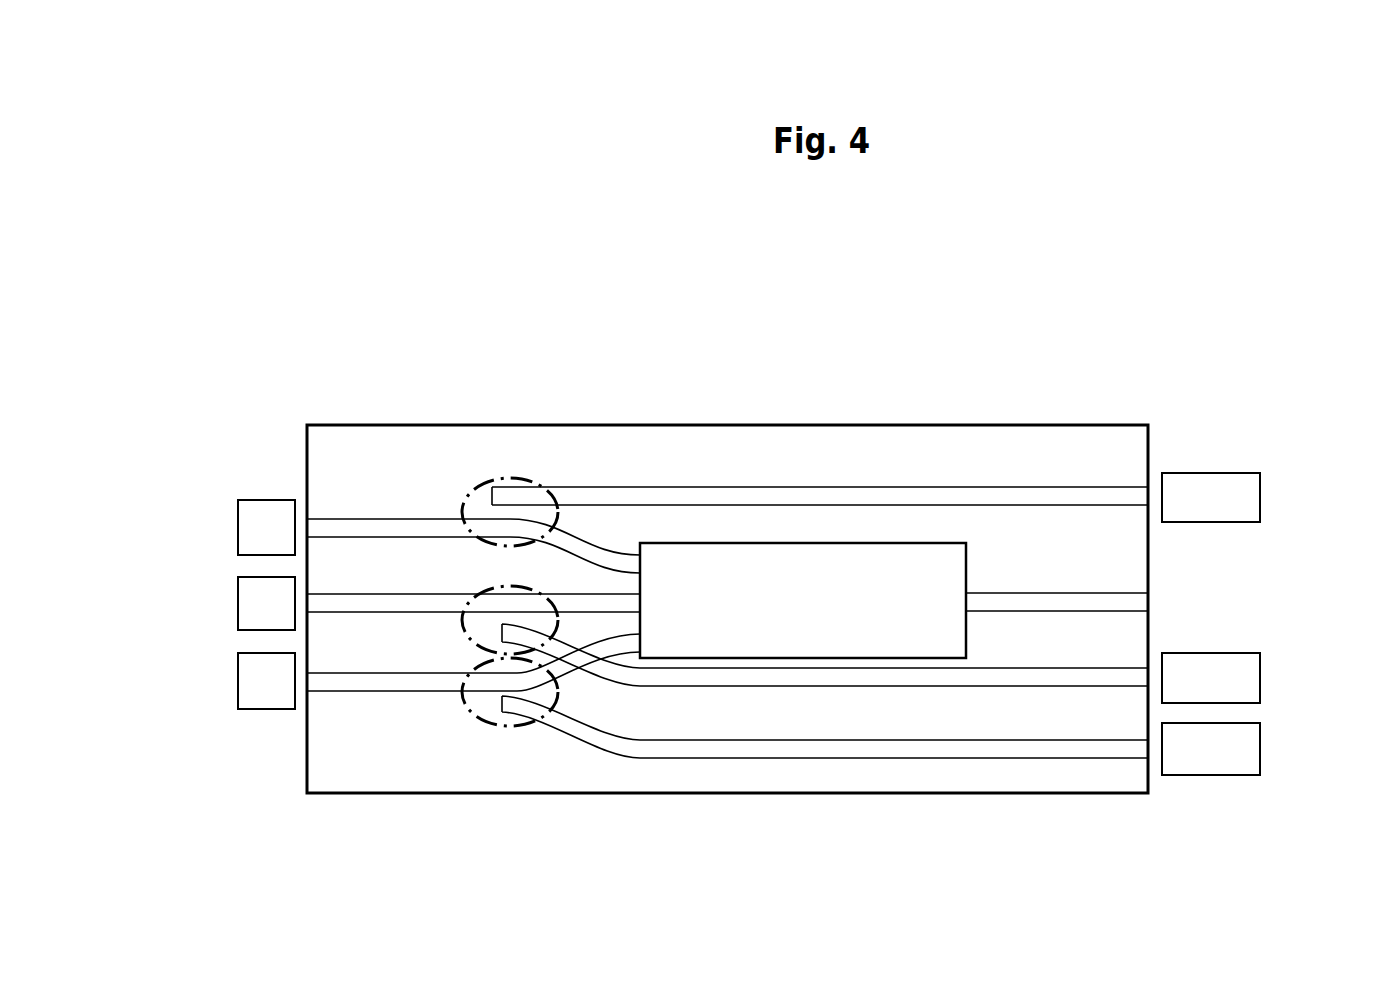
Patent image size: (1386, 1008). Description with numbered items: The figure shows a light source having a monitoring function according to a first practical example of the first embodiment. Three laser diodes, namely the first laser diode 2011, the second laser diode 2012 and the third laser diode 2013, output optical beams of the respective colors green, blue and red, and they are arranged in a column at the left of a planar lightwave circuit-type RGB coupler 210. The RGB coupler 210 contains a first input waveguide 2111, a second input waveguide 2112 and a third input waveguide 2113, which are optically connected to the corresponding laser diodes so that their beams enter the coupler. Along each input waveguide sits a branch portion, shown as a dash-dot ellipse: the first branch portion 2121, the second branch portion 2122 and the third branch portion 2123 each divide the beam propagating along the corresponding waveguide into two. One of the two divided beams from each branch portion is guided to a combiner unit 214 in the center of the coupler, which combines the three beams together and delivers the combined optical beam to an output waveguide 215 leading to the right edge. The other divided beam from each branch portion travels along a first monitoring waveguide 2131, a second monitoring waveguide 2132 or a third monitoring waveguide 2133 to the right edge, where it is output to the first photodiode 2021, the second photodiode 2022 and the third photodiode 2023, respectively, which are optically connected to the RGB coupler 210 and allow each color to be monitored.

The PLC-type RGB coupler 210 is at (993, 425).
The first laser diode 2011 is at (238, 532).
The second laser diode 2012 is at (238, 608).
The third laser diode 2013 is at (238, 686).
The first input waveguide 2111 is at (407, 523).
The second input waveguide 2112 is at (407, 599).
The third input waveguide 2113 is at (407, 677).
The first branch portion 2121 is at (508, 478).
The second branch portion 2122 is at (508, 586).
The third branch portion 2123 is at (482, 722).
The first monitoring waveguide 2131 is at (1025, 493).
The second monitoring waveguide 2132 is at (1025, 672).
The third monitoring waveguide 2133 is at (1025, 745).
The combiner unit 214 is at (900, 543).
The output waveguide 215 is at (1025, 597).
The first photodiode 2021 is at (1260, 497).
The second photodiode 2022 is at (1260, 678).
The third photodiode 2023 is at (1260, 749).